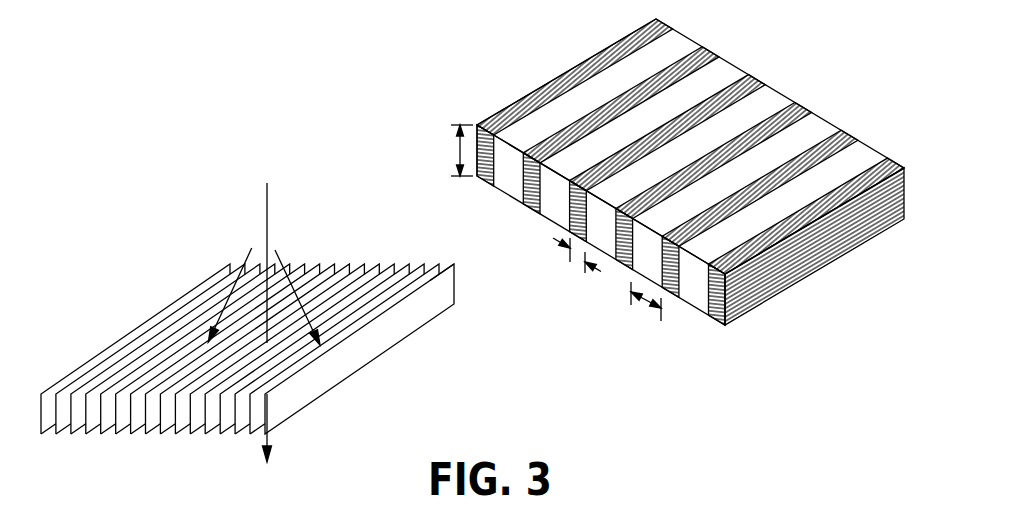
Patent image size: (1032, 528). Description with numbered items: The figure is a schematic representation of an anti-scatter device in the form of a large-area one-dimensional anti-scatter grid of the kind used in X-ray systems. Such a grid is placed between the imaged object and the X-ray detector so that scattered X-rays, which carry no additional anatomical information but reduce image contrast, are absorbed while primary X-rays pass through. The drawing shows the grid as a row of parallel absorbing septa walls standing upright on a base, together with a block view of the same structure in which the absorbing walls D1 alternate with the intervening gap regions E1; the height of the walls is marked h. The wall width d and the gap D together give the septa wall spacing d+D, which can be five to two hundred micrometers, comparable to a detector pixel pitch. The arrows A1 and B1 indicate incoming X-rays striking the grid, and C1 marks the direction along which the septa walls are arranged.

The incident light axis A1 is at (282, 304).
The incident light rays B1 is at (249, 275).
The grating direction C1 is at (440, 259).
The grating structure / high refractive index portion D1 is at (380, 336).
The low refractive index portion E1 is at (772, 107).
The grating height h is at (454, 150).
The septa wall width d is at (577, 267).
The septa wall gap D is at (646, 311).